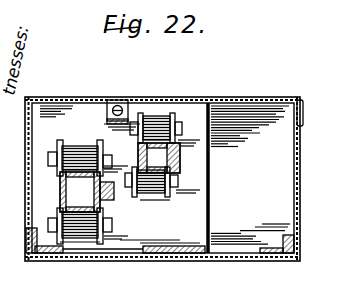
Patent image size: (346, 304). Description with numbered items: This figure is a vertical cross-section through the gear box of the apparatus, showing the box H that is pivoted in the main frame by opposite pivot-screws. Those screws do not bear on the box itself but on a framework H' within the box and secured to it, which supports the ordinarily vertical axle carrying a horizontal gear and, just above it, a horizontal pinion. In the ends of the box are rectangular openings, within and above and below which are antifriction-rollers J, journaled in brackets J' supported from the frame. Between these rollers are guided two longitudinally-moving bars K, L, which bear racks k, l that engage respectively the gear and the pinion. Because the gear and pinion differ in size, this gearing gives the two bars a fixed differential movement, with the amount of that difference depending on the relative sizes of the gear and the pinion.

The box H is at (176, 179).
The framework H' is at (180, 178).
The antifriction-rollers J is at (112, 182).
The brackets J' is at (112, 175).
The rack k is at (110, 207).
The longitudinally-moving bar K is at (57, 195).
The longitudinally-moving bar L is at (226, 166).
The rack l is at (213, 150).